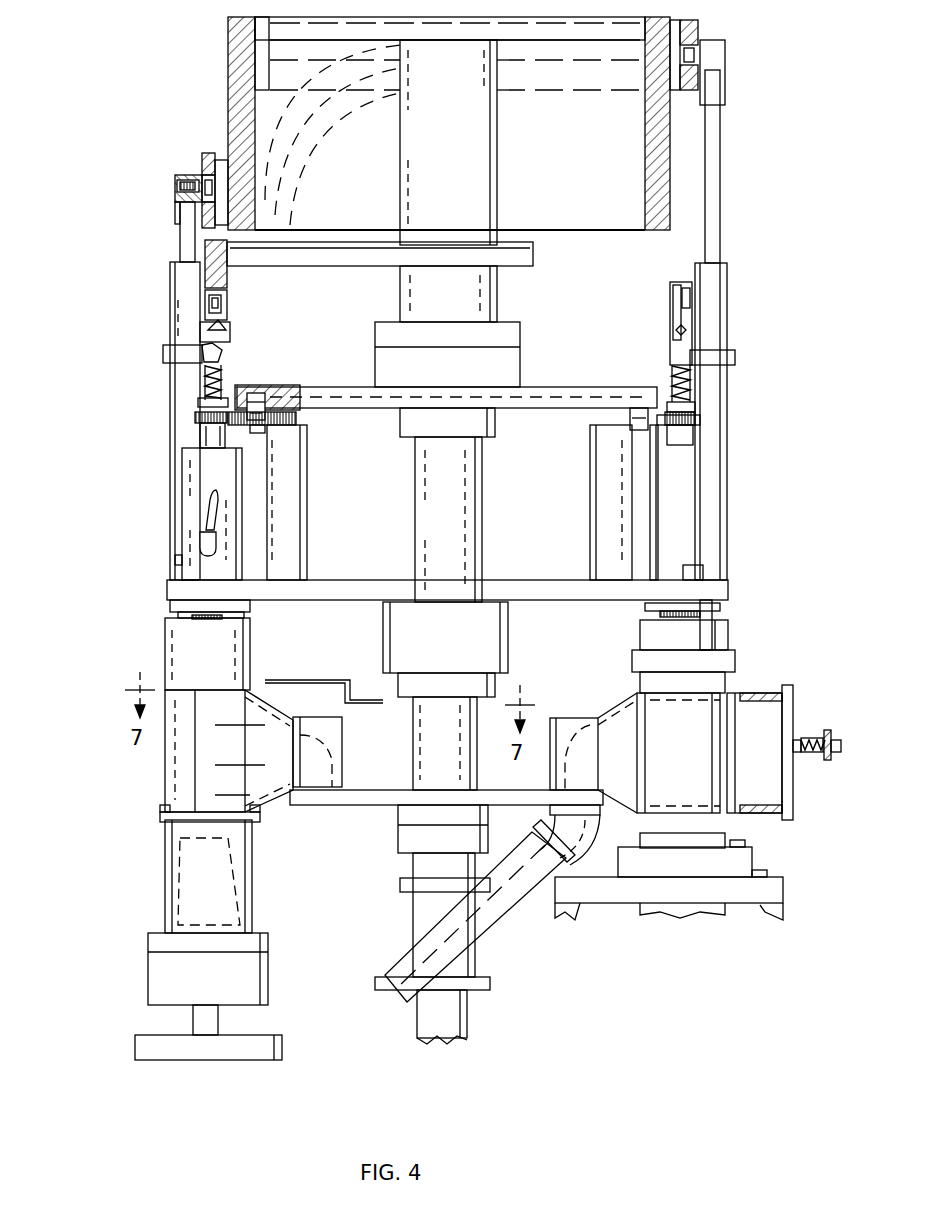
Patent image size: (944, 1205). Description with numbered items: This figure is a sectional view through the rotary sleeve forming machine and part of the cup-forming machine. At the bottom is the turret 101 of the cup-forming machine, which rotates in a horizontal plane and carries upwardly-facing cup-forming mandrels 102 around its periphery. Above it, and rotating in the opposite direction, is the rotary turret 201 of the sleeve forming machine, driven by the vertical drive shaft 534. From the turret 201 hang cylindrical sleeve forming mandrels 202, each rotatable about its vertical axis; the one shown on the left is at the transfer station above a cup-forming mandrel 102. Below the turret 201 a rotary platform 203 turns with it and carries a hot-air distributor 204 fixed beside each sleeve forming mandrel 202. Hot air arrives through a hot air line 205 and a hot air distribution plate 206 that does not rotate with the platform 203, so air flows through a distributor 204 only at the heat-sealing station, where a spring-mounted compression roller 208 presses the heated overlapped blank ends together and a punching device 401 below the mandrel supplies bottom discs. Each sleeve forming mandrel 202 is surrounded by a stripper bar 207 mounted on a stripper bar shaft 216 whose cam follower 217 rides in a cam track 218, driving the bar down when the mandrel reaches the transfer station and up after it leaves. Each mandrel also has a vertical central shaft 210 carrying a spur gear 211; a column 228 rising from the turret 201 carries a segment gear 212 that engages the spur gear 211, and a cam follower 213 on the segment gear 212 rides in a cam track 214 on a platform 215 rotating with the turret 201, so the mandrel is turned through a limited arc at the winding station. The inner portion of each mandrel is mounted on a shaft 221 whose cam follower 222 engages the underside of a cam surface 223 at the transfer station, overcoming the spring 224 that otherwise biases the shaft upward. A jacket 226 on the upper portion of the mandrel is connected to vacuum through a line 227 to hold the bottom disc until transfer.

The turret 101 is at (145, 1048).
The cup-forming mandrel 102 is at (175, 885).
The rotary turret 201 is at (170, 590).
The sleeve forming mandrel 202 is at (175, 662).
The rotary platform 203 is at (382, 806).
The hot-air distributor 204 is at (170, 760).
The hot air line 205 is at (480, 925).
The hot air distribution plate 206 is at (548, 835).
The stripper bar 207 is at (735, 655).
The spring-mounted compression roller 208 is at (848, 735).
The vertical central shaft 210 is at (200, 440).
The spur gear 211 is at (195, 415).
The segment gear 212 is at (250, 428).
The cam follower 213 is at (262, 395).
The cam track 214 is at (282, 387).
The platform 215 is at (343, 387).
The stripper bar shaft 216 is at (186, 240).
The cam follower 217 is at (207, 168).
The cam track 218 is at (232, 147).
The shaft 221 is at (678, 380).
The cam follower 222 is at (675, 288).
The cam surface 223 is at (210, 282).
The spring 224 is at (224, 383).
The jacket 226 is at (188, 522).
The line 227 is at (205, 510).
The column 228 is at (290, 490).
The punching device 401 is at (780, 890).
The vertical drive shaft 534 is at (468, 1015).